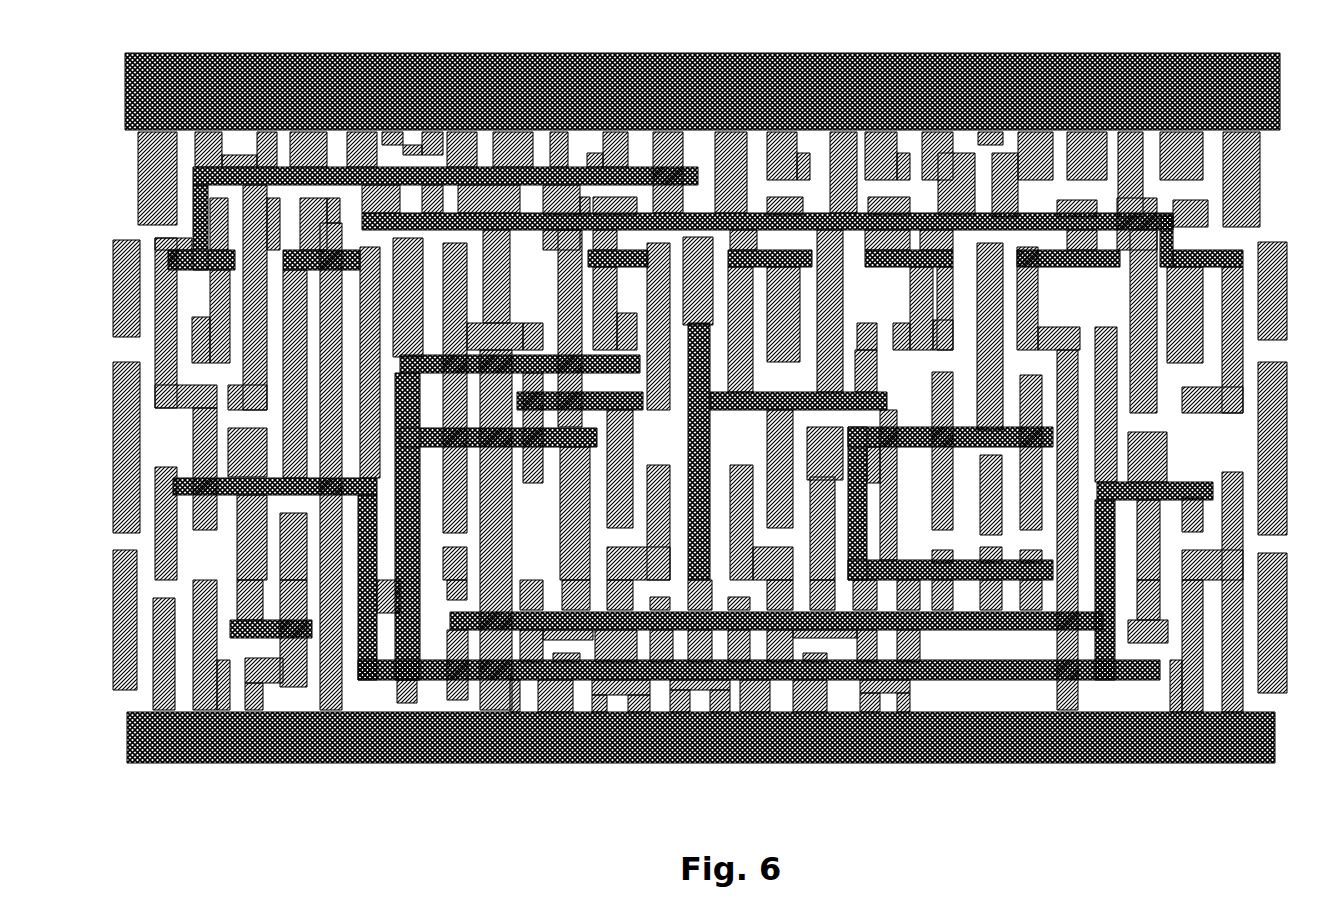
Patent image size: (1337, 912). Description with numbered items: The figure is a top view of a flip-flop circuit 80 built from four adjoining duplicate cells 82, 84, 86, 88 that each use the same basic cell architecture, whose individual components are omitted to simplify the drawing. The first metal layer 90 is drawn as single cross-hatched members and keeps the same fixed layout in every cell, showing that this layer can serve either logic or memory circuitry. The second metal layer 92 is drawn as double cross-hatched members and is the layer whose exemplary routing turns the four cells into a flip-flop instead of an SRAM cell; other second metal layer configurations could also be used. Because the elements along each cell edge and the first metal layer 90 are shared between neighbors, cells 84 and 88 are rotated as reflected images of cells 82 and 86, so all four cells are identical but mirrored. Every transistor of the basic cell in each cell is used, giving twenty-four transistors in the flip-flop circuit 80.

The flip-flop circuit 80 is at (1223, 37).
The cell 82 is at (127, 792).
The cell 84 is at (409, 792).
The cell 86 is at (699, 792).
The cell 88 is at (1272, 830).
The first metal layer 90 is at (1262, 205).
The second metal layer 92 is at (990, 53).